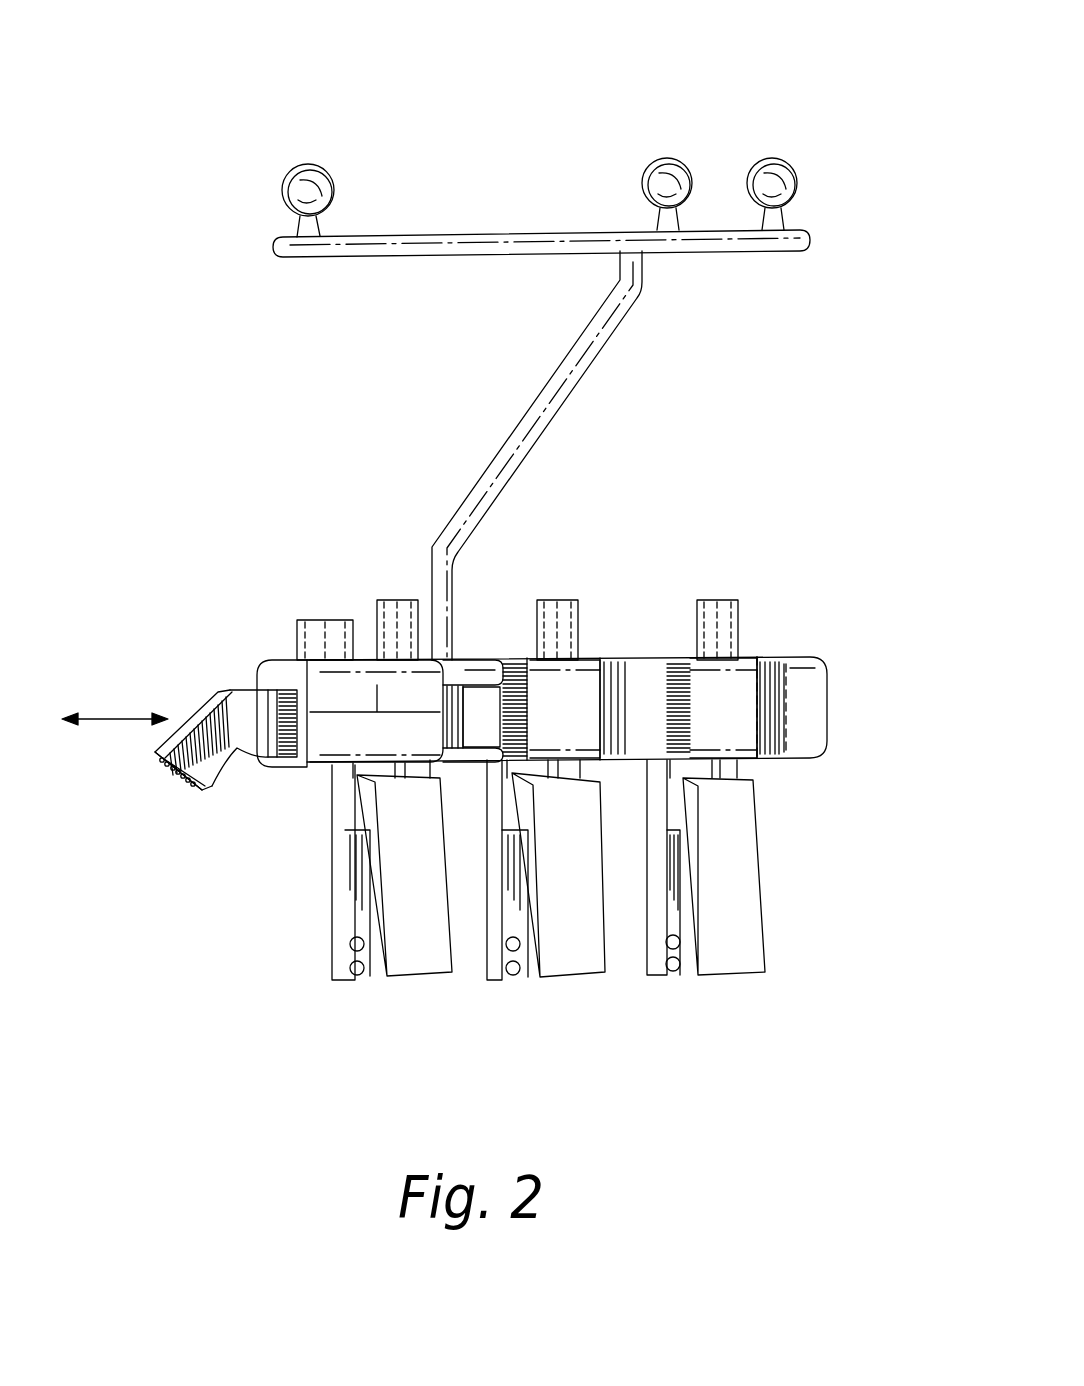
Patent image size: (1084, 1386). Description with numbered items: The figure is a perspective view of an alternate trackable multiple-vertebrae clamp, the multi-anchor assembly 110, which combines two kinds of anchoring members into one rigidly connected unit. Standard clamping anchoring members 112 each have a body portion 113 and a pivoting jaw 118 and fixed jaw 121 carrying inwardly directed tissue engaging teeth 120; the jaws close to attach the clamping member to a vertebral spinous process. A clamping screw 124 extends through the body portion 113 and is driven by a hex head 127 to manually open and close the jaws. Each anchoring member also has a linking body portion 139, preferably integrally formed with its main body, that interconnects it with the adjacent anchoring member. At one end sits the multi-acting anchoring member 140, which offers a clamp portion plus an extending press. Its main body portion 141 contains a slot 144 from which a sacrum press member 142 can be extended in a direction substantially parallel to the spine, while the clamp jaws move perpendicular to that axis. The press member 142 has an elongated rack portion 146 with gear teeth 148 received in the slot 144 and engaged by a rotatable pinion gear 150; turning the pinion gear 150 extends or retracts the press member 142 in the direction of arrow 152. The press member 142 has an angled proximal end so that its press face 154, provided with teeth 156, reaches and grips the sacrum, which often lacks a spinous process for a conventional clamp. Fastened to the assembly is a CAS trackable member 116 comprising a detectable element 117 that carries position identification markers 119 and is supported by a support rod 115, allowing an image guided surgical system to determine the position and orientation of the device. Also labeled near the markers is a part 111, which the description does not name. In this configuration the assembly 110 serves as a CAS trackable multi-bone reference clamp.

The multi-anchor assembly 110 is at (773, 467).
The ball stem 111 is at (300, 231).
The clamping anchoring member 112 is at (620, 634).
The body portion 113 is at (736, 690).
The support rod 115 is at (555, 400).
The CAS trackable member 116 is at (542, 178).
The detectable element 117 is at (455, 248).
The pivoting jaw 118 is at (722, 868).
The position identification markers 119 is at (298, 178).
The tissue engaging teeth 120 is at (674, 968).
The fixed jaw 121 is at (668, 898).
The clamping screw 124 is at (718, 782).
The hex head 127 is at (735, 660).
The linking body portion 139 is at (638, 700).
The multi-acting anchoring member 140 is at (474, 634).
The main body portion 141 is at (355, 727).
The press member 142 is at (238, 690).
The slot 144 is at (487, 708).
The rack portion 146 is at (445, 700).
The gear teeth 148 is at (250, 690).
The pinion gear 150 is at (335, 632).
The arrow 152 is at (110, 712).
The press face 154 is at (196, 795).
The teeth 156 is at (165, 770).